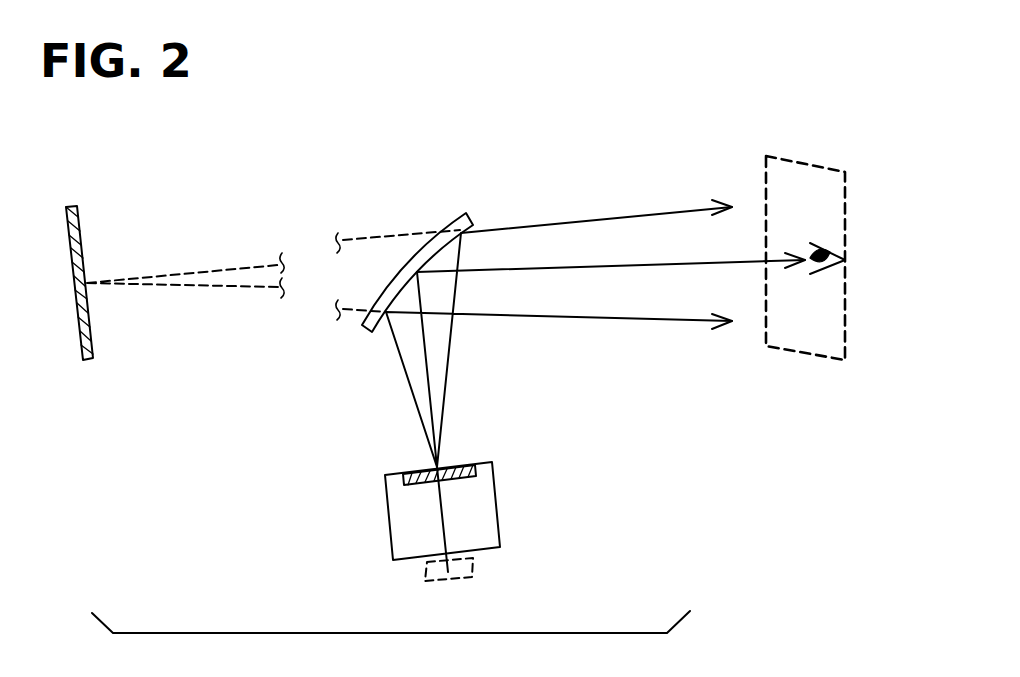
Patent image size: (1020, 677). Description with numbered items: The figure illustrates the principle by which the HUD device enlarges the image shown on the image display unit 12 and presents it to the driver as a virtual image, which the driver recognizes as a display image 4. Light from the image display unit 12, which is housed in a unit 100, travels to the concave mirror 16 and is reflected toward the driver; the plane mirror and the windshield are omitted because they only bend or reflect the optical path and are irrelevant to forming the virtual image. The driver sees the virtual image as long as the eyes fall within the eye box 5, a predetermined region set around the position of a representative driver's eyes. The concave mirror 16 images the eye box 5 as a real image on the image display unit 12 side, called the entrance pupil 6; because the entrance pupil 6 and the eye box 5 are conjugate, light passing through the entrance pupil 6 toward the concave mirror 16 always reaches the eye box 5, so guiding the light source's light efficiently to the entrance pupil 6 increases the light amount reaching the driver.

The display image 4 is at (80, 223).
The concave mirror 16 is at (448, 223).
The eye box 5 is at (763, 182).
The projection device housing 100 is at (387, 515).
The image display unit 12 is at (417, 472).
The entrance pupil 6 is at (473, 567).